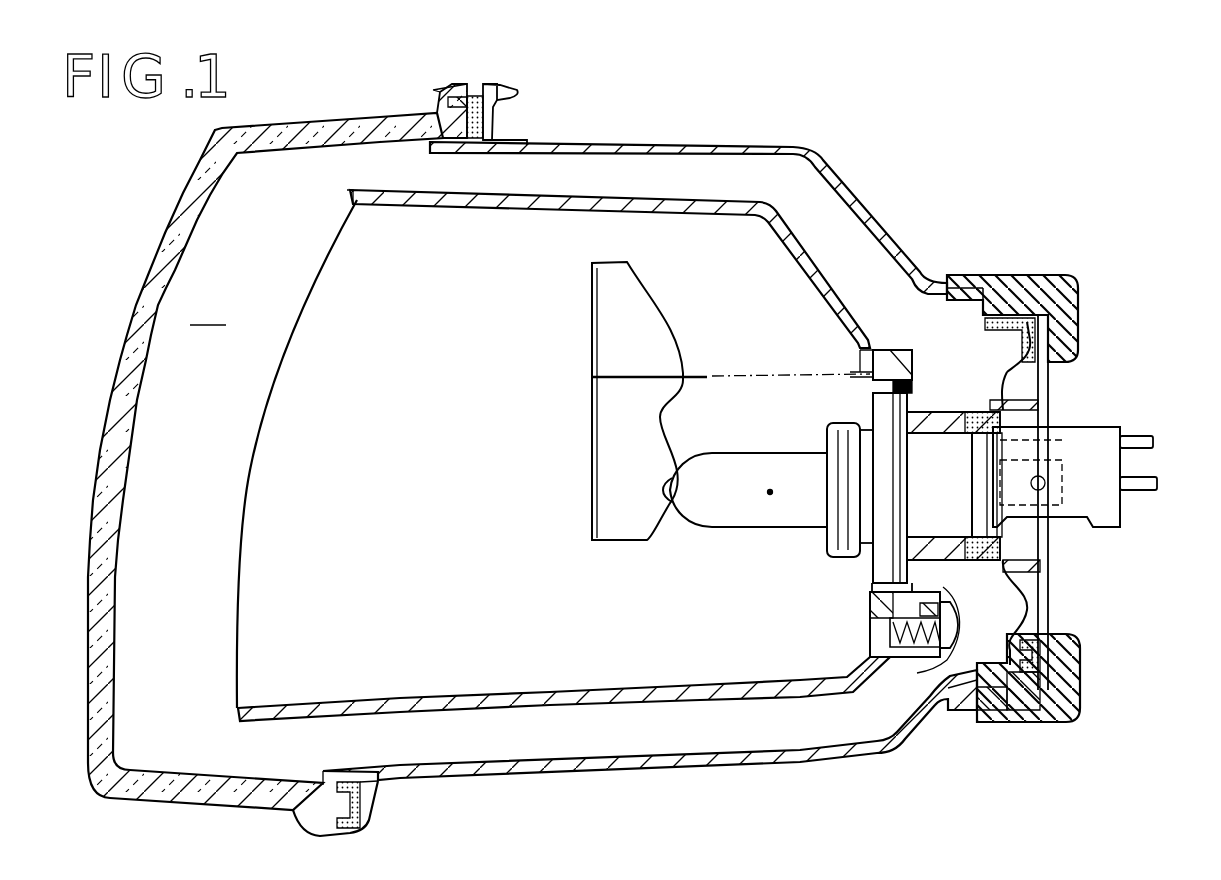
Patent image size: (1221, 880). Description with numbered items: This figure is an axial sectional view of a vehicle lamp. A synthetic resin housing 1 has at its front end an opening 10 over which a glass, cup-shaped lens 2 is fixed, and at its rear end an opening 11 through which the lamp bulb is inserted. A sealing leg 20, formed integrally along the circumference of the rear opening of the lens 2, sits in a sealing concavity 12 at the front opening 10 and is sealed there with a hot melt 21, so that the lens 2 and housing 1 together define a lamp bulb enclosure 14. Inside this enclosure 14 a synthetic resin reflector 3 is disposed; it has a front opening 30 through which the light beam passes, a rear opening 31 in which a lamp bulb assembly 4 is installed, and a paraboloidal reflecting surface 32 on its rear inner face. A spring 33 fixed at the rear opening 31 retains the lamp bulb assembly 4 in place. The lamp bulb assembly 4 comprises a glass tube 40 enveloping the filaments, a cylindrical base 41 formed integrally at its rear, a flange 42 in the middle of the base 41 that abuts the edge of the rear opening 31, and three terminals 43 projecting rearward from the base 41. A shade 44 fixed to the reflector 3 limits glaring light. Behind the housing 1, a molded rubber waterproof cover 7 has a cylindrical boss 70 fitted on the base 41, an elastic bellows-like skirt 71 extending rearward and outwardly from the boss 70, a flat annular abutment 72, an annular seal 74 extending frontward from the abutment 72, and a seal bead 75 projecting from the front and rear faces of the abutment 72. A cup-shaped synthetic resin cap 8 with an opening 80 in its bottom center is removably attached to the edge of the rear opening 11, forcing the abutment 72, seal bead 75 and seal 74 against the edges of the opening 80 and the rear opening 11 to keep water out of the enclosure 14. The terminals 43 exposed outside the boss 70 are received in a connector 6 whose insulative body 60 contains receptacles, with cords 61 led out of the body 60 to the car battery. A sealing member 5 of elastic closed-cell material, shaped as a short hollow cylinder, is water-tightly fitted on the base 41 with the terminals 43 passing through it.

The housing 1 is at (658, 137).
The lens 2 is at (181, 191).
The reflector 3 is at (701, 192).
The lamp bulb assembly 4 is at (737, 451).
The sealing member 5 is at (1005, 410).
The connector 6 is at (1098, 441).
The waterproof cover 7 is at (1045, 575).
The cap 8 is at (1021, 270).
The front opening 10 is at (392, 139).
The rear opening 11 is at (1000, 357).
The sealing concavity 12 is at (494, 123).
The lamp bulb enclosure 14 is at (212, 308).
The sealing leg 20 is at (455, 120).
The hot melt 21 is at (473, 105).
The front opening of reflector 30 is at (350, 197).
The rear opening of reflector 31 is at (877, 410).
The reflecting surface 32 is at (866, 350).
The spring 33 is at (937, 593).
The glass tube 40 is at (733, 530).
The base 41 is at (920, 512).
The flange 42 is at (940, 684).
The terminals 43 is at (1060, 460).
The shade 44 is at (647, 322).
The connector body 60 is at (1112, 513).
The cords 61 is at (1150, 437).
The boss 70 is at (1032, 615).
The skirt 71 is at (1018, 575).
The abutment 72 is at (1035, 657).
The seal 74 is at (992, 690).
The seal bead 75 is at (1028, 685).
The opening of cap 80 is at (1036, 402).